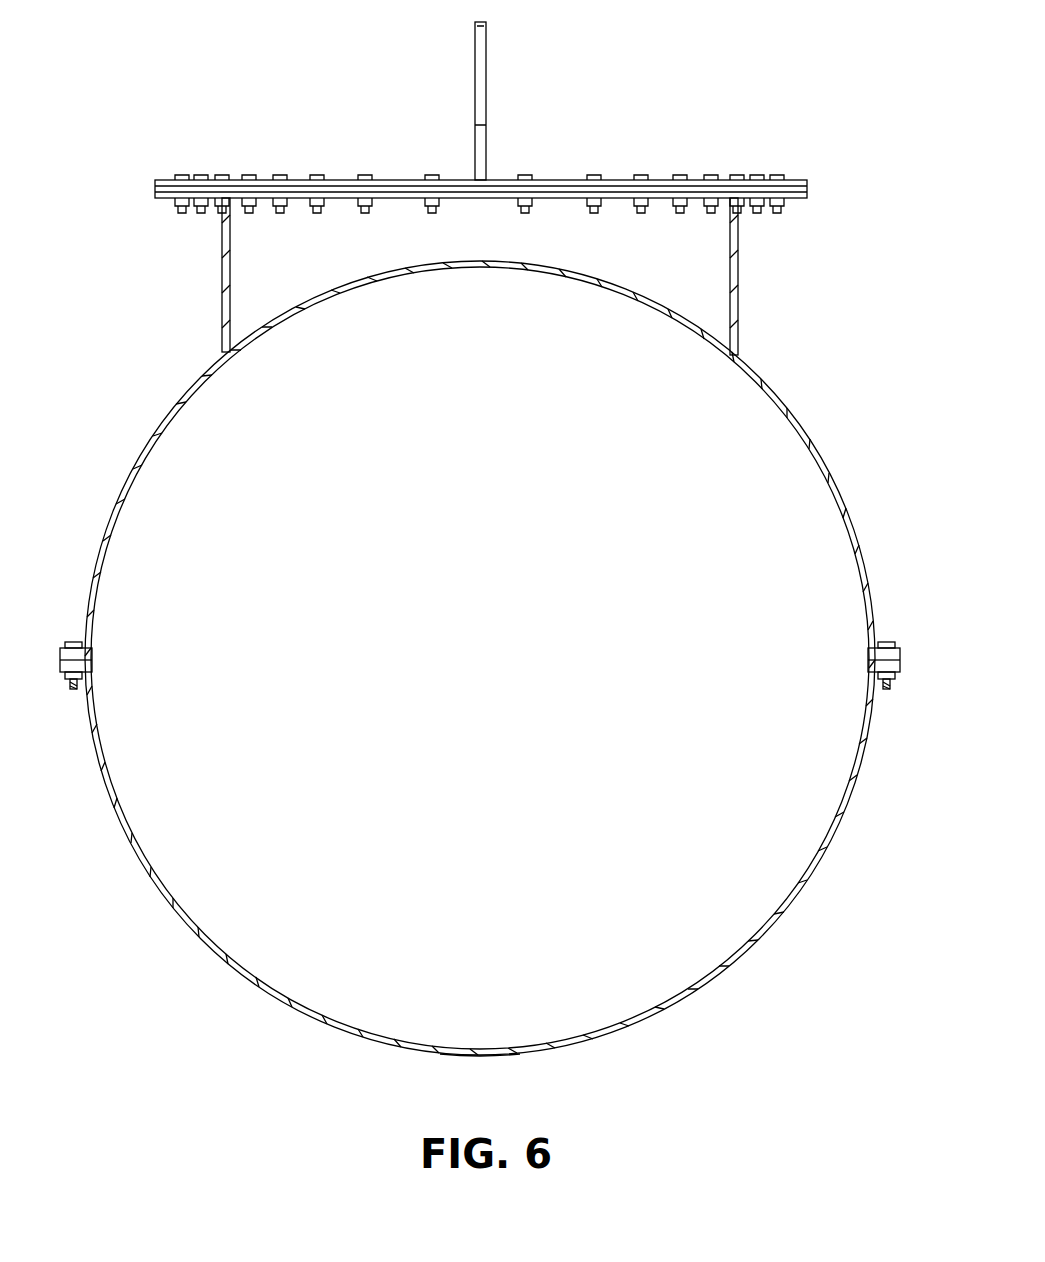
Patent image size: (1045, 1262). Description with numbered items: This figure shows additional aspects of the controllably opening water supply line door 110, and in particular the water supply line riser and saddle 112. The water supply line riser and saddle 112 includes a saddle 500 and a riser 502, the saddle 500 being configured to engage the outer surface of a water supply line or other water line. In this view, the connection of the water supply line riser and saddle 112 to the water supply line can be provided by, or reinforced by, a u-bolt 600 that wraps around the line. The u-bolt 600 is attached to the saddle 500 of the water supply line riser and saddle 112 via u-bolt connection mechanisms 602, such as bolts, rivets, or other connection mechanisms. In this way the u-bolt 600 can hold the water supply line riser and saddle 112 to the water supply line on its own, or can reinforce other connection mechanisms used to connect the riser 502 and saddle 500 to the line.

The controllably opening water supply line door 110 is at (808, 190).
The water supply line riser and saddle 112 is at (798, 318).
The saddle 500 is at (160, 435).
The riser 502 is at (222, 262).
The u-bolt 600 is at (486, 1055).
The u-bolt connection mechanisms 602 is at (80, 566).